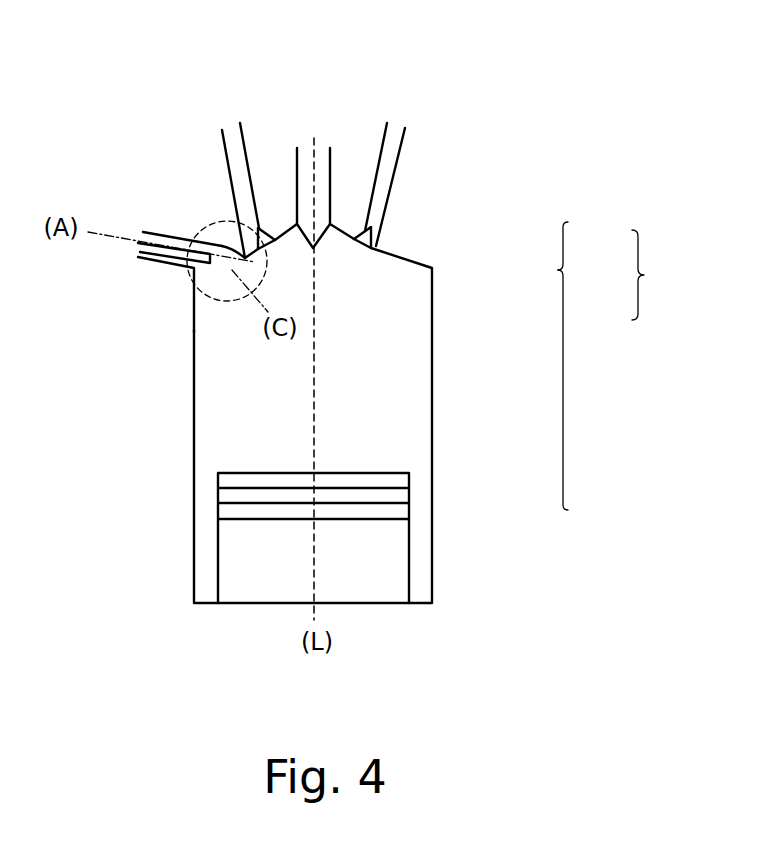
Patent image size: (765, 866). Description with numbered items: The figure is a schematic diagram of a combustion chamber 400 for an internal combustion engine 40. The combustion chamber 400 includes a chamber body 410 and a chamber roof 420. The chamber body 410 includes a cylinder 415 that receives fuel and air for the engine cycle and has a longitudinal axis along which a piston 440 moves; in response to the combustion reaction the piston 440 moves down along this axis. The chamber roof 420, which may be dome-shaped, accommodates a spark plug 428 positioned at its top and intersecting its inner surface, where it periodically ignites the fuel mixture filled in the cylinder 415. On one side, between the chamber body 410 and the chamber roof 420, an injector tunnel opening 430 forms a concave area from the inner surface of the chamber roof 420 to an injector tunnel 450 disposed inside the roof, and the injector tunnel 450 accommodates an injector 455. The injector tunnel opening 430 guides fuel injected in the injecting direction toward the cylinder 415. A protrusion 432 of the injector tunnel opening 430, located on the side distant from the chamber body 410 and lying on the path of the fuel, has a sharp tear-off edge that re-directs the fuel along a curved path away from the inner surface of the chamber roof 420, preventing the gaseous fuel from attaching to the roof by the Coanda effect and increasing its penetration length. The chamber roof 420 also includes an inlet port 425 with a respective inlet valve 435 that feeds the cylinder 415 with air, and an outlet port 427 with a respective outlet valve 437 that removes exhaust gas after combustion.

The internal combustion engine 40 is at (168, 120).
The combustion chamber 400 is at (644, 275).
The chamber body 410 is at (563, 307).
The cylinder 415 is at (278, 424).
The chamber roof 420 is at (563, 243).
The inlet port 425 is at (273, 227).
The outlet port 427 is at (355, 233).
The spark plug 428 is at (321, 140).
The injector tunnel opening 430 is at (181, 277).
The protrusion 432 is at (237, 240).
The inlet valve 435 is at (258, 250).
The outlet valve 437 is at (362, 252).
The piston 440 is at (384, 568).
The injector tunnel 450 is at (157, 264).
The injector 455 is at (157, 229).